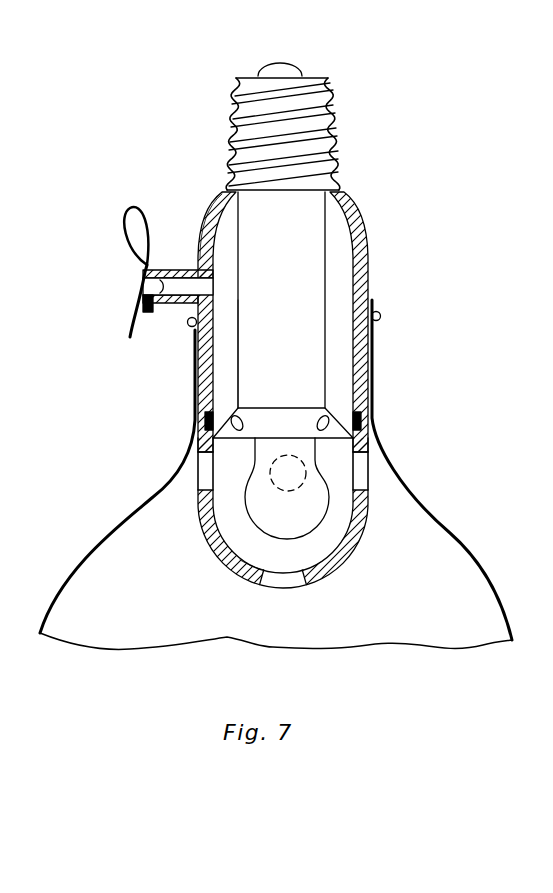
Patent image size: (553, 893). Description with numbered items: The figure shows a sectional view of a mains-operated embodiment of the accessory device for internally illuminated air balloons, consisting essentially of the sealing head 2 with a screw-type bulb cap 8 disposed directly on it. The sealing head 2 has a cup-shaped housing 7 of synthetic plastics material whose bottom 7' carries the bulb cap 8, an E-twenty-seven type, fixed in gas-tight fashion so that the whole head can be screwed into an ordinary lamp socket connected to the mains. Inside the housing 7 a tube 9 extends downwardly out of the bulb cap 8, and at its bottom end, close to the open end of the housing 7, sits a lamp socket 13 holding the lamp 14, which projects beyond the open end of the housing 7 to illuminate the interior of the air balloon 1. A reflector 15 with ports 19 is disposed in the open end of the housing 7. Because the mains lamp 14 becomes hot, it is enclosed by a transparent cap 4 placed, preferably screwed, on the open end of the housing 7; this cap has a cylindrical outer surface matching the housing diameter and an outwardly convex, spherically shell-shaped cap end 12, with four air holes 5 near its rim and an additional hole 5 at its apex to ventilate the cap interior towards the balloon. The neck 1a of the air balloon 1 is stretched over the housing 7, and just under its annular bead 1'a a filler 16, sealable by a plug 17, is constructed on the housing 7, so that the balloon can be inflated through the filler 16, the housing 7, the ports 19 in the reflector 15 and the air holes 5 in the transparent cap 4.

The air balloon 1 is at (276, 474).
The neck 1a is at (370, 362).
The annular bead 1'a is at (409, 302).
The sealing head 2 is at (372, 228).
The transparent cap 4 is at (202, 510).
The air hole 5 is at (270, 478).
The housing 7 is at (316, 322).
The bottom 7' is at (301, 194).
The screw-type bulb cap 8 is at (232, 125).
The tube 9 is at (253, 220).
The cap end 12 is at (250, 582).
The lamp socket 13 is at (260, 370).
The lamp 14 is at (323, 525).
The reflector 15 is at (302, 422).
The filler 16 is at (168, 268).
The plug 17 is at (152, 288).
The ports 19 is at (200, 395).